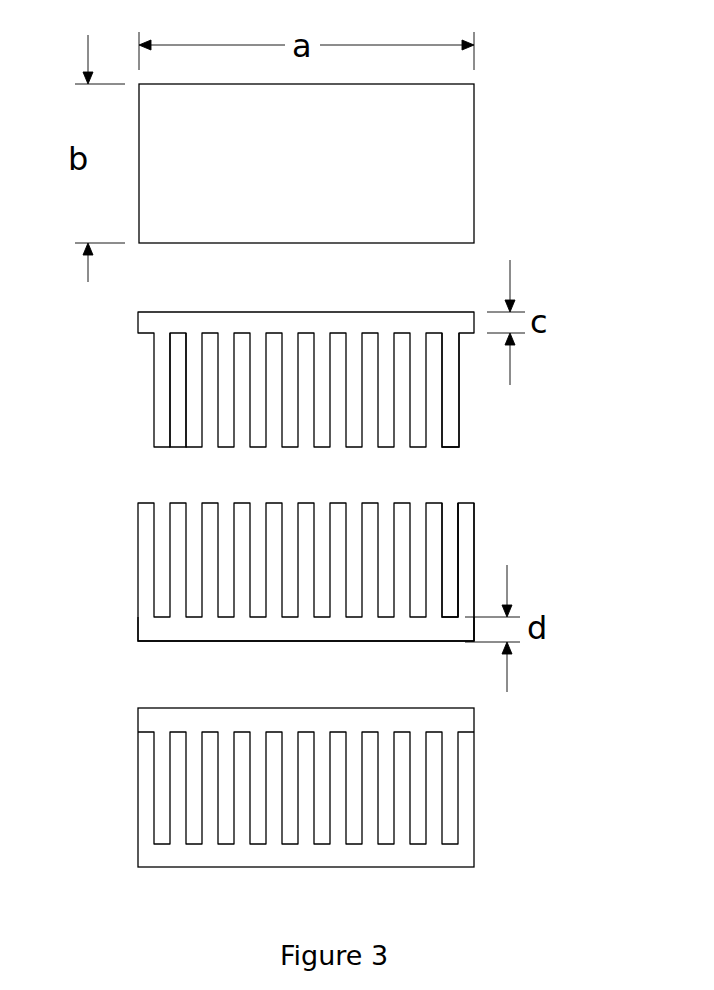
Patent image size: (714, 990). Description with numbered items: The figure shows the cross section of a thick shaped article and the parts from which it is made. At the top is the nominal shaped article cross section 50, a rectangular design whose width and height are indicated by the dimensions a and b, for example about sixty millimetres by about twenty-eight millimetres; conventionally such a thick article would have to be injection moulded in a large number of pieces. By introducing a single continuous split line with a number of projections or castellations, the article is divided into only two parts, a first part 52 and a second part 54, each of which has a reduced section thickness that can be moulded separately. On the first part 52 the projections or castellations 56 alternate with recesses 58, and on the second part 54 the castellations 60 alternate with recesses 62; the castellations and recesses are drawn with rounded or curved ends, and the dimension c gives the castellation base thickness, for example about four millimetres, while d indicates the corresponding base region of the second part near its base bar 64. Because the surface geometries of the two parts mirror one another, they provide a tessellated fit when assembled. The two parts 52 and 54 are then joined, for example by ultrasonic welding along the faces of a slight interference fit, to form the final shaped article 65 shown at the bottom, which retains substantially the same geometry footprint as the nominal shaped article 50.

The nominal shaped article cross section 50 is at (508, 142).
The first part 52 is at (535, 388).
The second part 54 is at (110, 566).
The projections or castellations of the first part 56 is at (448, 428).
The recesses of the first part 58 is at (178, 432).
The projections or castellations of the second part 60 is at (466, 538).
The recesses of the second part 62 is at (447, 518).
The base bar of third layer 64 is at (153, 613).
The final shaped article 65 is at (513, 778).